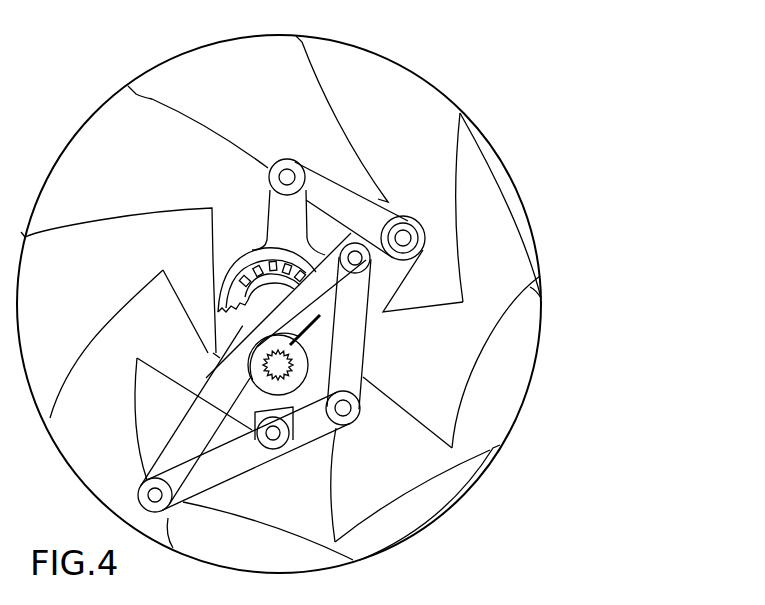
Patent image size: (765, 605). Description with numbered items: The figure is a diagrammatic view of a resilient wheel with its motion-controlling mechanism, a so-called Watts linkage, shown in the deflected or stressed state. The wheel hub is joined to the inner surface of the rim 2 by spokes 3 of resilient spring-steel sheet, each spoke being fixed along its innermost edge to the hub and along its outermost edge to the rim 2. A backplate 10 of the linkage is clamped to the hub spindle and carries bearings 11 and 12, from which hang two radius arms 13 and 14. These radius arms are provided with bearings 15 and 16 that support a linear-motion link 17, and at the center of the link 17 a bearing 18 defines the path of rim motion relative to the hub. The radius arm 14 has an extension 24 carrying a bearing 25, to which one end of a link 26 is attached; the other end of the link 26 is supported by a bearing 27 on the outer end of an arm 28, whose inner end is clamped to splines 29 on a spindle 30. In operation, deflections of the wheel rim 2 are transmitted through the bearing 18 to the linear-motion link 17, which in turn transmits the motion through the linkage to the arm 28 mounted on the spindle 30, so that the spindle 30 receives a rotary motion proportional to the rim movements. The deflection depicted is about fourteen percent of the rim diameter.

The rim 2 is at (85, 118).
The spokes 3 is at (135, 213).
The backplate 10 is at (250, 405).
The bearing 11 is at (417, 216).
The bearing 12 is at (148, 493).
The radius arm 13 is at (347, 200).
The radius arm 14 is at (210, 480).
The bearing 15 is at (287, 157).
The bearing 16 is at (272, 460).
The linear-motion link 17 is at (268, 197).
The bearing 18 is at (253, 262).
The extension 24 is at (330, 447).
The bearing 25 is at (357, 420).
The link 26 is at (358, 357).
The bearing 27 is at (370, 263).
The arm 28 is at (330, 285).
The splines 29 is at (213, 356).
The spindle 30 is at (258, 388).